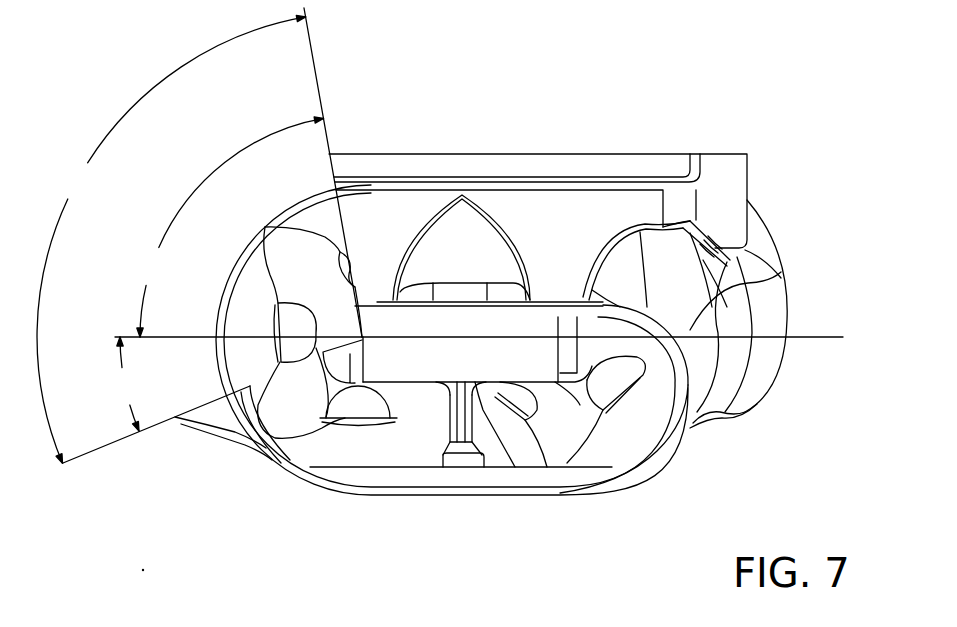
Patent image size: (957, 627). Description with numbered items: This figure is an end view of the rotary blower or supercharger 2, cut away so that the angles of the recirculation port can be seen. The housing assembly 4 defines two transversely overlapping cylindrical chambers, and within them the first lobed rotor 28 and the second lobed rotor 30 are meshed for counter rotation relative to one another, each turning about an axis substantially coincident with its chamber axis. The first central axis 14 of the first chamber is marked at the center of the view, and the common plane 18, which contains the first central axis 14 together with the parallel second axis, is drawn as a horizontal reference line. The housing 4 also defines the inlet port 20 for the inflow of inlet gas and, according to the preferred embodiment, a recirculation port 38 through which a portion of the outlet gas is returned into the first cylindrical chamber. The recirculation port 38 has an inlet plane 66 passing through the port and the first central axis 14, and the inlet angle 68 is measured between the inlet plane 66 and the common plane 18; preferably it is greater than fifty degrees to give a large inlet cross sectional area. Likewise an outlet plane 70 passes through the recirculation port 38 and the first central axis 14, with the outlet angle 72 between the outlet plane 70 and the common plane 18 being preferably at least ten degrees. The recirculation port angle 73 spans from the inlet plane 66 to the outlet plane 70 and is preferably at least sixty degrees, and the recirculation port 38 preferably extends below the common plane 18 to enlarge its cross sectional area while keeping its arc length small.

The rotary blower or supercharger 2 is at (740, 108).
The housing assembly 4 is at (747, 168).
The first central axis 14 is at (362, 337).
The common plane 18 is at (818, 333).
The inlet port 20 is at (663, 433).
The first lobed rotor 28 is at (434, 442).
The second lobed rotor 30 is at (600, 440).
The recirculation port 38 is at (267, 237).
The inlet plane 66 is at (326, 127).
The inlet angle 68 is at (229, 227).
The outlet plane 70 is at (153, 427).
The outlet angle 72 is at (123, 384).
The recirculation port angle 73 is at (171, 239).